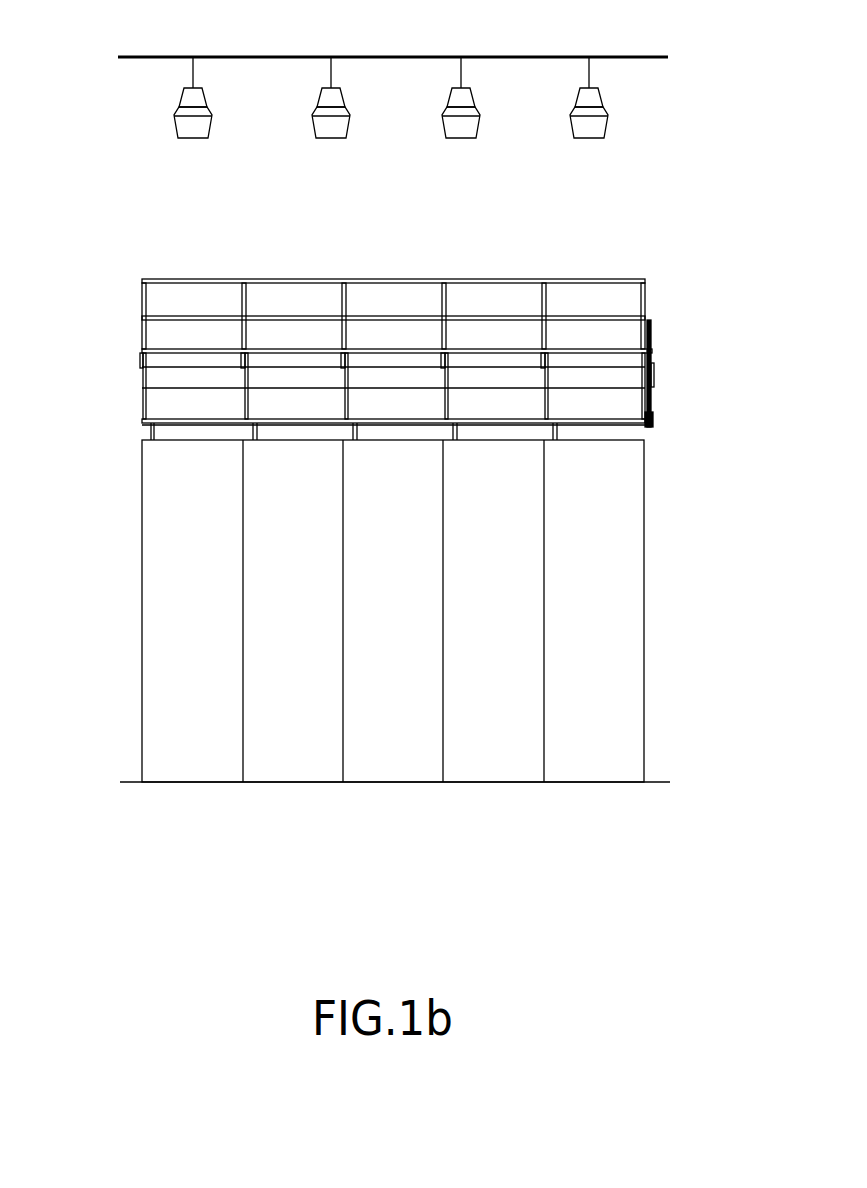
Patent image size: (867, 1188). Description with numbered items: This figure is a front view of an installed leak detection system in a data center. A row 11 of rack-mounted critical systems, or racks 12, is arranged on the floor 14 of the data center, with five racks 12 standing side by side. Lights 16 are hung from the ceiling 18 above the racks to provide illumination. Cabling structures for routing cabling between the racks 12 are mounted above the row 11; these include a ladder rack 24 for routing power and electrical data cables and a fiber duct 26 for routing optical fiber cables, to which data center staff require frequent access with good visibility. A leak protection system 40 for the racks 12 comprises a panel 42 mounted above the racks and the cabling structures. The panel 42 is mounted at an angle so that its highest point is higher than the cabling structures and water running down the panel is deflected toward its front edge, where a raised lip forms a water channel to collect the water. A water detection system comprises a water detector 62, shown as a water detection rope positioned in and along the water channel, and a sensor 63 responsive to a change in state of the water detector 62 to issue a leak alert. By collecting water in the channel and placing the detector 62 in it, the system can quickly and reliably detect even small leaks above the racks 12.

The row 11 is at (337, 611).
The rack-mounted critical system 12 is at (142, 525).
The floor 14 is at (120, 782).
The light 16 is at (174, 125).
The ceiling 18 is at (658, 55).
The ladder rack 24 is at (652, 349).
The fiber duct 26 is at (654, 376).
The leak protection system 40 is at (368, 338).
The panel 42 is at (158, 283).
The water detector 62 is at (648, 317).
The sensor 63 is at (655, 419).